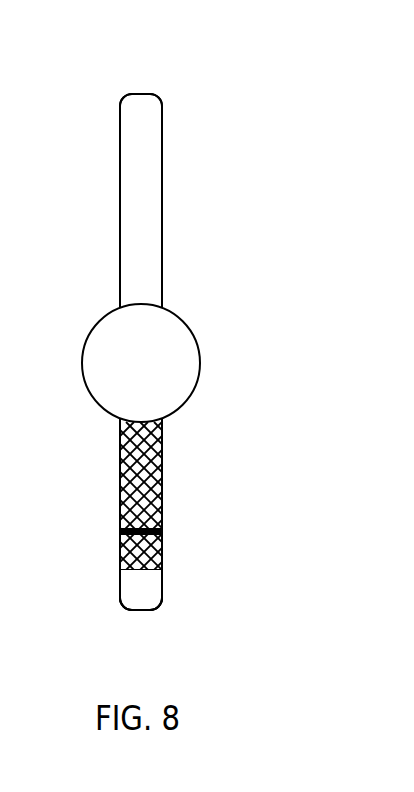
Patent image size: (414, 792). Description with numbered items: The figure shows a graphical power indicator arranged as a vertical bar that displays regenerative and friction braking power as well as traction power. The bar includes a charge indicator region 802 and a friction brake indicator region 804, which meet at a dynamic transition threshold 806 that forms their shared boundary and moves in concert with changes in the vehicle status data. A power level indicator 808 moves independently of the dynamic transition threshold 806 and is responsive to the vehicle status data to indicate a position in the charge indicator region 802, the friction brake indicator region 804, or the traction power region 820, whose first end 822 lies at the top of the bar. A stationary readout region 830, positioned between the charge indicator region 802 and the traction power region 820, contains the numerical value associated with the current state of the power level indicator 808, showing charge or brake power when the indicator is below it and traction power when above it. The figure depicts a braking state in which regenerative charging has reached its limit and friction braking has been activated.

The charge indicator region 802 is at (163, 492).
The friction brake indicator region 804 is at (150, 583).
The dynamic transition threshold 806 is at (120, 508).
The power level indicator 808 is at (135, 572).
The traction power region 820 is at (150, 228).
The first end 822 is at (140, 94).
The readout region 830 is at (185, 347).